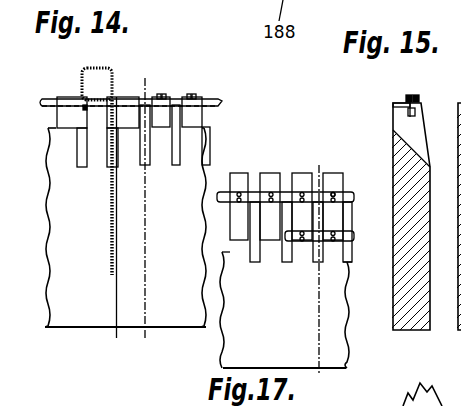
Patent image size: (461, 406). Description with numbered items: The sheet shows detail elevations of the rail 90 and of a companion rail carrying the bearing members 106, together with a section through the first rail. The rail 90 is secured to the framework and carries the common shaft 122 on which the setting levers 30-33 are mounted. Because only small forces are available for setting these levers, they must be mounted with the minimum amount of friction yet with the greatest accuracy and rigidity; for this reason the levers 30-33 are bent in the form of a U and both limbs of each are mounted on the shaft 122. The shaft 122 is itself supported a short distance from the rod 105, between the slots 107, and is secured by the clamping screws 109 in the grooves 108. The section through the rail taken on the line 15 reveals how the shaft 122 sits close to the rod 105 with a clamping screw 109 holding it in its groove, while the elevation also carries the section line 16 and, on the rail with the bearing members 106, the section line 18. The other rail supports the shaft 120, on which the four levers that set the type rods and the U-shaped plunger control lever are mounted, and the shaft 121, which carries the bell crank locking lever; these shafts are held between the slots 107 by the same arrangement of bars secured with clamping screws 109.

In FIG. 14, the setting levers 30-33 is at (96, 68).
In FIG. 14, the common shaft 122 is at (43, 99).
In FIG. 15, the common shaft 122 is at (393, 105).
In FIG. 14, the rod 105 is at (203, 120).
In FIG. 15, the rod 105 is at (425, 118).
In FIG. 14, the slots 107 is at (174, 162).
In FIG. 17, the slots 107 is at (285, 173).
In FIG. 15, the slots 107 is at (402, 120).
In FIG. 14, the clamping screws 109 is at (158, 95).
In FIG. 17, the clamping screws 109 is at (334, 193).
In FIG. 15, the clamping screws 109 is at (409, 96).
In FIG. 14, the section line 15— 15 is at (146, 216).
In FIG. 14, the section line 16 is at (119, 215).
In FIG. 14, the rail 90 is at (159, 315).
In FIG. 15, the rail 90 is at (416, 331).
In FIG. 17, the bearing members 106 is at (241, 173).
In FIG. 17, the grooves 108 is at (270, 241).
In FIG. 17, the shaft 120 is at (309, 200).
In FIG. 17, the shaft 121 is at (353, 243).
In FIG. 17, the section line 18— 18 is at (323, 378).